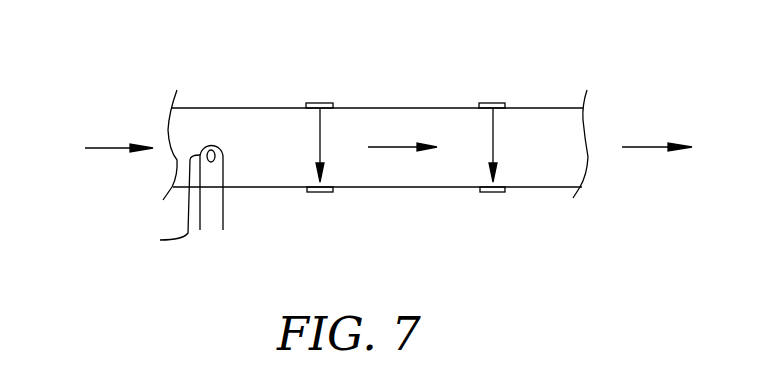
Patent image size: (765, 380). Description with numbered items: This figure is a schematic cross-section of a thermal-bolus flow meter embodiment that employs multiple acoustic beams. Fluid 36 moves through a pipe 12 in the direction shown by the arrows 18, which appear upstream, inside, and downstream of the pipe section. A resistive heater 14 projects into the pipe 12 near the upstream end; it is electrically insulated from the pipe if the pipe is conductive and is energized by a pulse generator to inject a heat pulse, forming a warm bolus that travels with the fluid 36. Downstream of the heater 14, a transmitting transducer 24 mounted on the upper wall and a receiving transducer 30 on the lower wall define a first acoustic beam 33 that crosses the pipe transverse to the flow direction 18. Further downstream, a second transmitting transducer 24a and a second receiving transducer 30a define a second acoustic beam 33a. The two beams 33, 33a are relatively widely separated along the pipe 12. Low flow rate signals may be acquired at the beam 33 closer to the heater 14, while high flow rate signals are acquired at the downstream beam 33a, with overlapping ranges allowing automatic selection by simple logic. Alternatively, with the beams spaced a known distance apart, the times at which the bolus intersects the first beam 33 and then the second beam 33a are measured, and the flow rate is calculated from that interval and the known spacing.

The pipe 12 is at (462, 187).
The resistive heater 14 is at (171, 200).
The direction of flow 18 is at (113, 148).
The transmitting transducer 24 is at (325, 103).
The second transmitting transducer 24a is at (493, 103).
The receiving transducer 30 is at (320, 192).
The second receiving transducer 30a is at (500, 192).
The acoustic beam 33 is at (318, 139).
The second acoustic beam 33a is at (493, 145).
The fluid 36 is at (267, 130).